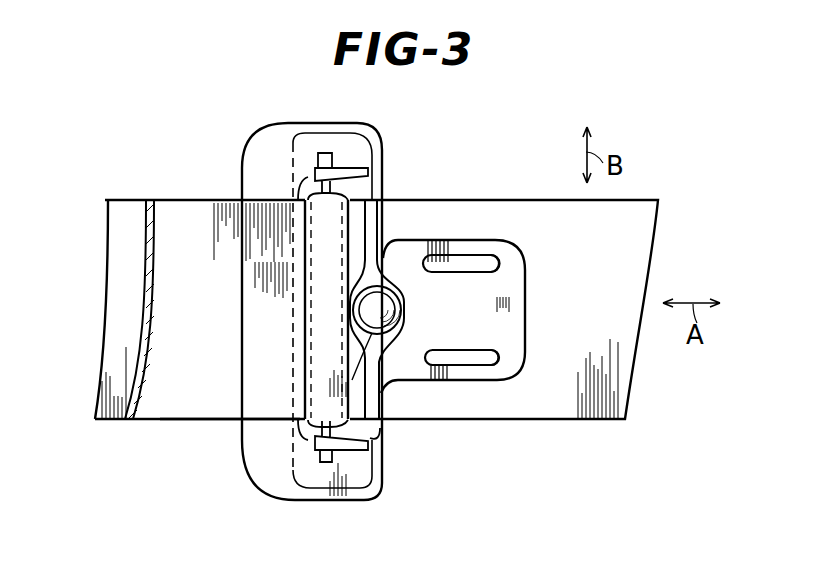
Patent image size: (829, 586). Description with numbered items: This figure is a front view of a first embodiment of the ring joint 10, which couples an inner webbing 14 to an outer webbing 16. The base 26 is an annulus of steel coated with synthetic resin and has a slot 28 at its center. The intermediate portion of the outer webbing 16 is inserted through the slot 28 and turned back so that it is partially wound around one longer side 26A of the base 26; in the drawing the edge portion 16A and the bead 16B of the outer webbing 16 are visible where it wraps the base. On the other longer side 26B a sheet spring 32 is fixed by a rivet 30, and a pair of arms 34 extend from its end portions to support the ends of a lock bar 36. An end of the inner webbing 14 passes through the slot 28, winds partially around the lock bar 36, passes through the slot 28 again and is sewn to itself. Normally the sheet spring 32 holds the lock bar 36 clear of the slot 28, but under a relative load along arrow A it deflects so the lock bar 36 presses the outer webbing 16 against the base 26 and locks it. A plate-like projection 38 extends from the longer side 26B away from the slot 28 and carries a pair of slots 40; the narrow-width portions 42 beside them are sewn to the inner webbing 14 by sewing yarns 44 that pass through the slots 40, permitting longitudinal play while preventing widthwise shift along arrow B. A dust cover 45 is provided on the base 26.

The ring joint 10 is at (418, 176).
The inner webbing 14 is at (527, 410).
The outer webbing 16 is at (127, 430).
The panel edge portion 16A is at (168, 420).
The panel bead 16B is at (133, 212).
The base 26 is at (268, 485).
The longer side of the base 26A is at (240, 407).
The other longer side of the base 26B is at (386, 372).
The slot 28 is at (298, 320).
The rivet 30 is at (403, 316).
The sheet spring 32 is at (398, 268).
The arms 34 is at (360, 172).
The lock bar 36 is at (335, 399).
The plate-like projection 38 is at (513, 288).
The slots 40 is at (487, 270).
The narrow-width portions 42 is at (470, 249).
The sewing yarns 44 is at (452, 242).
The dust cover 45 is at (312, 500).